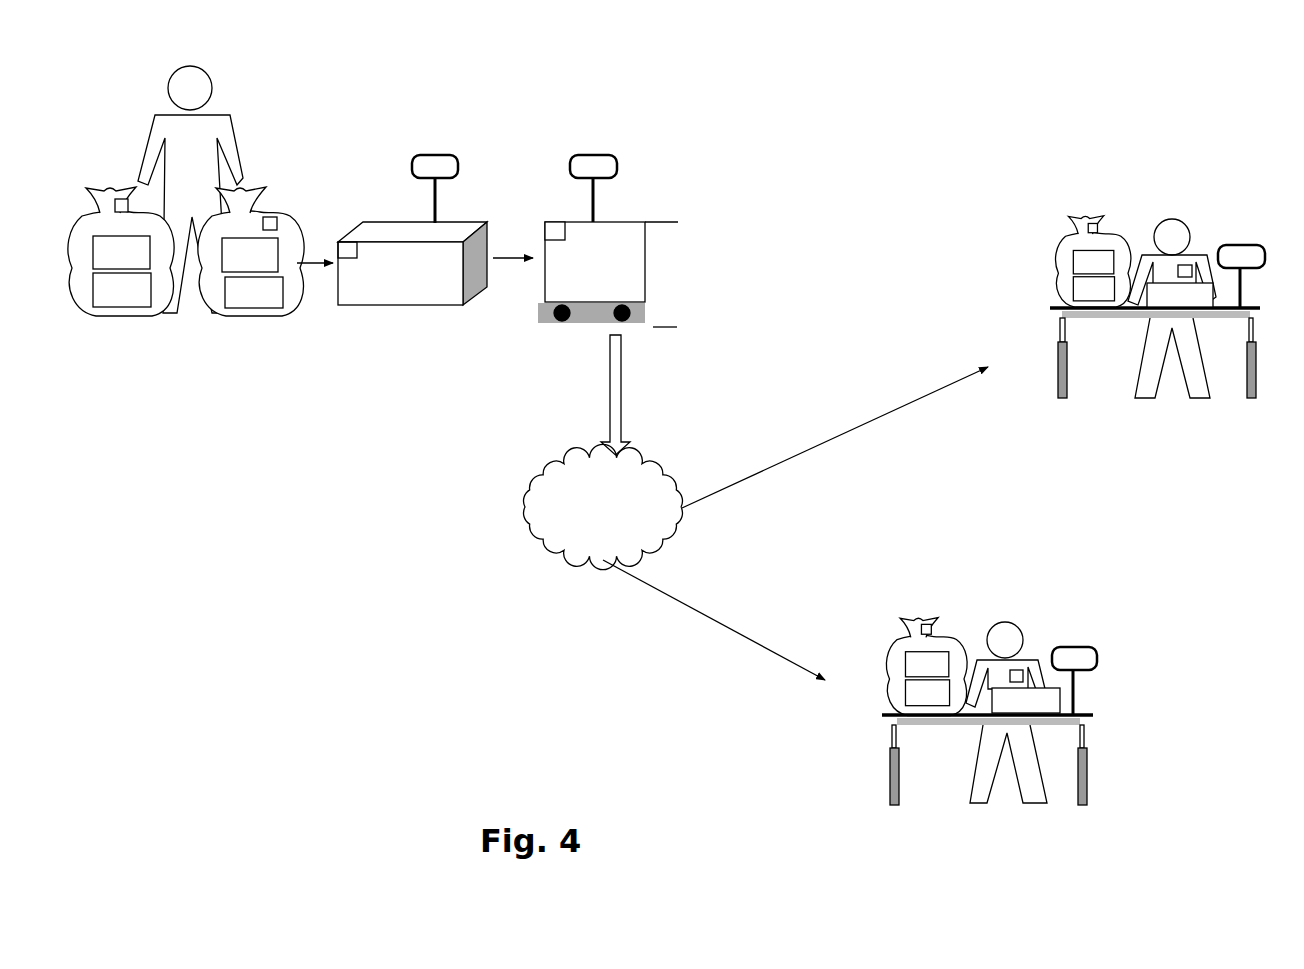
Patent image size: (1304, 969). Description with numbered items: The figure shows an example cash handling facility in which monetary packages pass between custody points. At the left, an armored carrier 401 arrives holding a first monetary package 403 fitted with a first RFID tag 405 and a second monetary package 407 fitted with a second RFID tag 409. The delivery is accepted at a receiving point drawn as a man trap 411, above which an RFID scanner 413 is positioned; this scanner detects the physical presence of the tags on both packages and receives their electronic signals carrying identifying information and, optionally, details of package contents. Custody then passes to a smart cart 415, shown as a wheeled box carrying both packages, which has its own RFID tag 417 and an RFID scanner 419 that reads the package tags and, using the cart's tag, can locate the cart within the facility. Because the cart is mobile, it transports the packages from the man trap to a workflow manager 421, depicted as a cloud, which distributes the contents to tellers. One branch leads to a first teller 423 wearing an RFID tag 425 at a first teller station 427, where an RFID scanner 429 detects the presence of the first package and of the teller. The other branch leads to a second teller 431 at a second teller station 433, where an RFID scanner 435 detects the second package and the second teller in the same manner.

The armored carrier 401 is at (140, 150).
The first monetary package 403 is at (127, 317).
The first RFID tag 405 is at (110, 215).
The second monetary package 407 is at (263, 323).
The second RFID tag 409 is at (277, 223).
The man trap 411 is at (402, 290).
The RFID scanner 413 is at (447, 153).
The smart cart 415 is at (538, 297).
The RFID tag 417 is at (543, 230).
The RFID scanner 419 is at (602, 170).
The workflow manager 421 is at (540, 532).
The first teller 423 is at (1172, 220).
The RFID tag 425 is at (1187, 267).
The first teller station 427 is at (1057, 347).
The RFID scanner 429 is at (1255, 243).
The second teller 431 is at (1003, 622).
The second teller station 433 is at (898, 777).
The RFID scanner 435 is at (1095, 647).